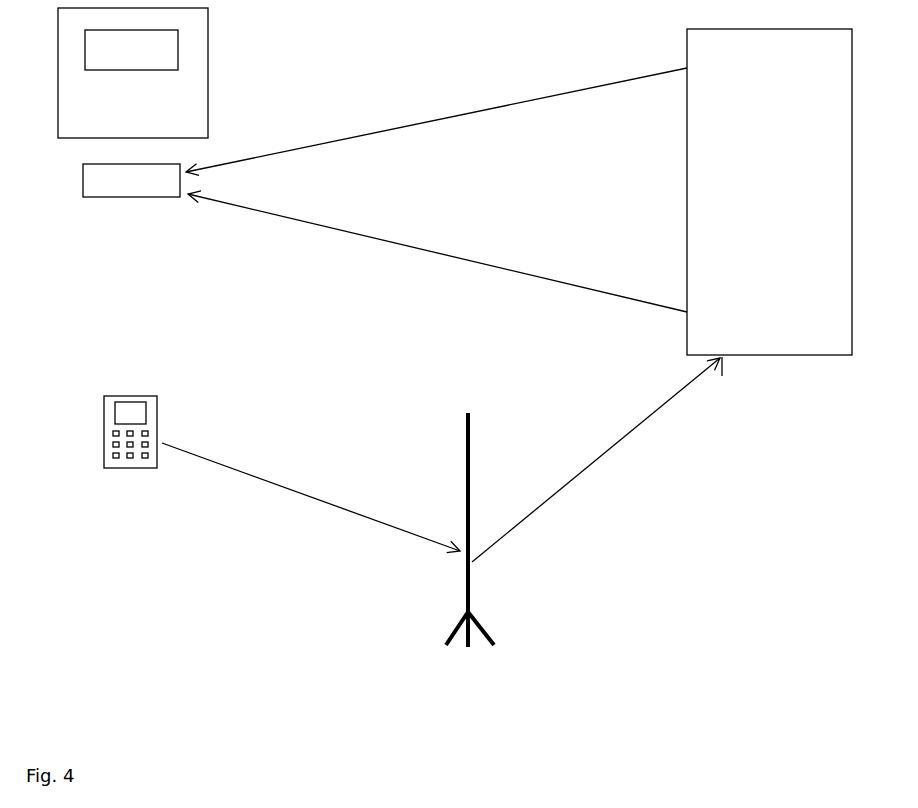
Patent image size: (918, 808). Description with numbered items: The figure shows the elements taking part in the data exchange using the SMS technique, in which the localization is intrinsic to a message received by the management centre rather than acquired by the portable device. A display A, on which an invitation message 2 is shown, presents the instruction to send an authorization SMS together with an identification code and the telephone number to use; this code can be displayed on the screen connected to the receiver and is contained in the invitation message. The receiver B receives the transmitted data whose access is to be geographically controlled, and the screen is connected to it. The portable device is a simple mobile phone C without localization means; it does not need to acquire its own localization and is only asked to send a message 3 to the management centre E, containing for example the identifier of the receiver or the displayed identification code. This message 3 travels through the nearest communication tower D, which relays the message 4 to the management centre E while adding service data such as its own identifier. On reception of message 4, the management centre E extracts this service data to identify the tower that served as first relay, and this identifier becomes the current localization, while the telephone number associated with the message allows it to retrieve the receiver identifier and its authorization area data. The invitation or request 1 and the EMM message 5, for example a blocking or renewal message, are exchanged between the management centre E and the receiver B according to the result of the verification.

The authorization computer display A is at (138, 73).
The authorization SMS message box 2 is at (136, 50).
The authorization server B is at (140, 180).
The mobile phone C is at (139, 432).
The cellular antenna tower D is at (470, 530).
The telecommunications network E is at (778, 192).
The authorization request transmission 1 is at (436, 120).
The message 3 is at (311, 497).
The message 4 is at (597, 459).
The EMM message 5 is at (437, 253).